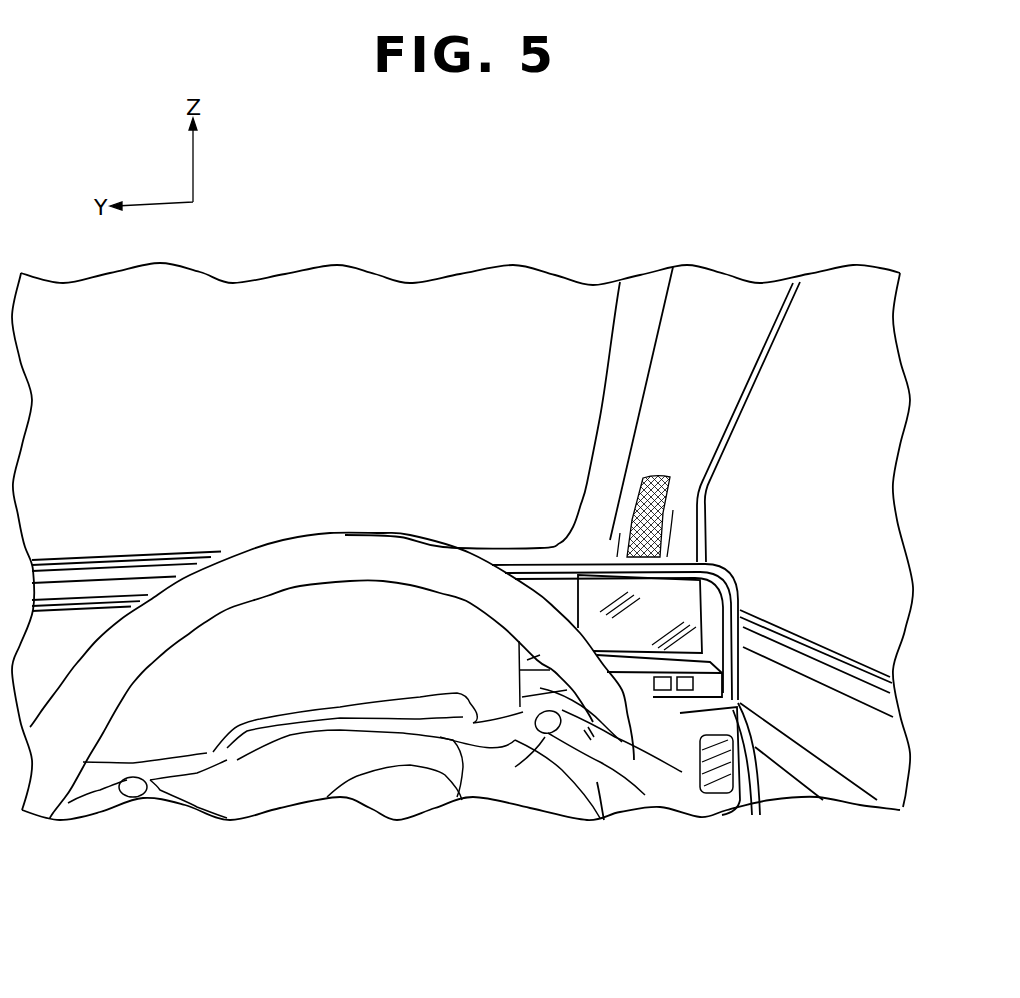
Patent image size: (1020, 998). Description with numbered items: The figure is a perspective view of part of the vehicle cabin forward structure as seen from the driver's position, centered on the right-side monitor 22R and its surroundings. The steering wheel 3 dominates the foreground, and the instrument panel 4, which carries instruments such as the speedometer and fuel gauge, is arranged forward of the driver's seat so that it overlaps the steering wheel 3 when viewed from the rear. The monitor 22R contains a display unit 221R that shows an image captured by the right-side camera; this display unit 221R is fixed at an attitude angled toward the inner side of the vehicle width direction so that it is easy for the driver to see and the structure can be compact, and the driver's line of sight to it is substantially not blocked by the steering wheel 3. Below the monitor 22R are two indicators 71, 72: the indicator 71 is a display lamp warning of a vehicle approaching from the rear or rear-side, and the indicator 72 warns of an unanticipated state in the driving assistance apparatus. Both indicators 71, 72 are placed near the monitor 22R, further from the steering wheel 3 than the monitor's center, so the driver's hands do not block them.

The steering wheel 3 is at (273, 560).
The instrument panel 4 is at (75, 627).
The monitor 22R is at (729, 561).
The display unit 221R is at (683, 599).
The indicator 71 is at (686, 691).
The indicator 72 is at (663, 691).